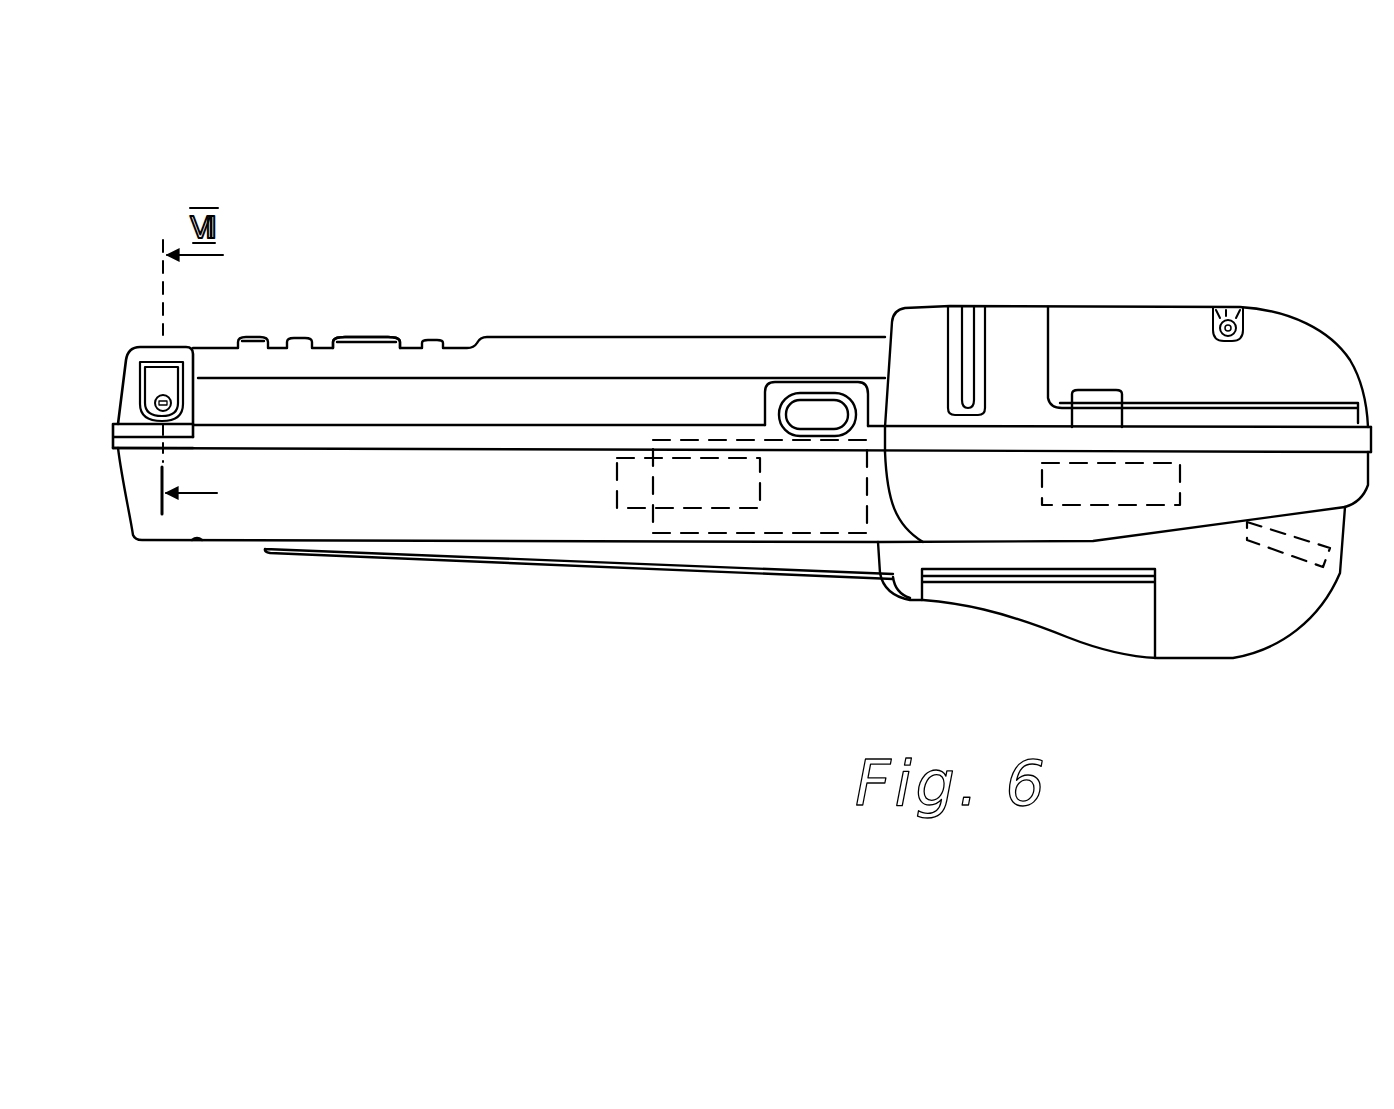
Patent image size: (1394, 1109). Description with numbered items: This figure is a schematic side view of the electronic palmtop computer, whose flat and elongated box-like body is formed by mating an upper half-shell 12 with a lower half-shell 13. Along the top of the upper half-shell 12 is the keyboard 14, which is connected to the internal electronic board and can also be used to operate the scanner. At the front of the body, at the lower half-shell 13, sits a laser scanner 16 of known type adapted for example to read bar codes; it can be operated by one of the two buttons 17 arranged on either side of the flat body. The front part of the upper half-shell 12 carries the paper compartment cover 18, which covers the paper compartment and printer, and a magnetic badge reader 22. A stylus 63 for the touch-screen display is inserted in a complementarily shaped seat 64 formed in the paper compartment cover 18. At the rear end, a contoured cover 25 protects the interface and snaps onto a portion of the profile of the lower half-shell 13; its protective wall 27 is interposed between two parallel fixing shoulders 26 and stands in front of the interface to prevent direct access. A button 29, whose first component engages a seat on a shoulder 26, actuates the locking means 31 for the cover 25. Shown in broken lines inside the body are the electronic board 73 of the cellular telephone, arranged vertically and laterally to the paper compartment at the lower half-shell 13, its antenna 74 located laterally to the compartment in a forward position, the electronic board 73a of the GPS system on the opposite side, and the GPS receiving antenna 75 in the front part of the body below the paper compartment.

The upper half-shell 12 is at (505, 355).
The lower half-shell 13 is at (483, 505).
The keyboard 14 is at (361, 338).
The laser scanner 16 is at (1341, 584).
The buttons 17 is at (813, 425).
The paper compartment cover 18 is at (1168, 337).
The magnetic badge reader 22 is at (968, 306).
The cover 25 is at (174, 326).
The fixing shoulders 26 is at (171, 357).
The protective wall 27 is at (122, 392).
The button 29 is at (172, 382).
The locking means 31 is at (146, 450).
The stylus 63 is at (1247, 335).
The seat 64 is at (1230, 307).
The electronic board 73 is at (712, 520).
The electronic board 73a is at (633, 485).
The antenna 74 is at (1093, 488).
The receiving antenna 75 is at (1285, 542).